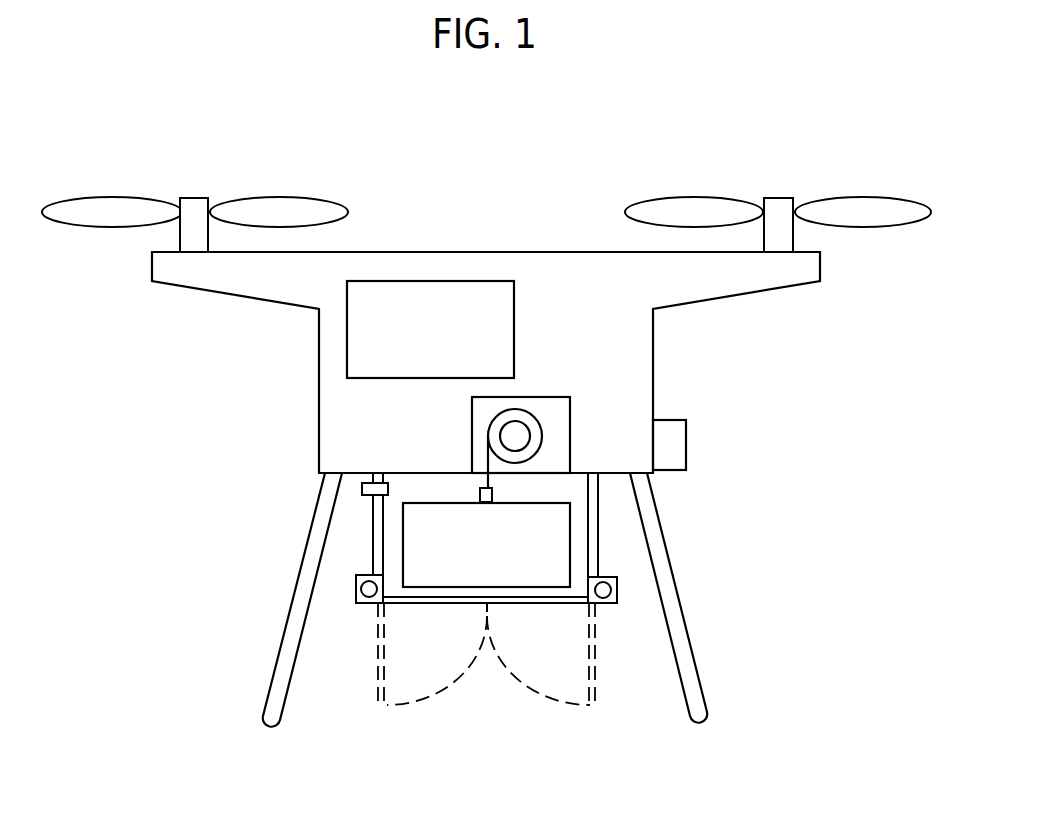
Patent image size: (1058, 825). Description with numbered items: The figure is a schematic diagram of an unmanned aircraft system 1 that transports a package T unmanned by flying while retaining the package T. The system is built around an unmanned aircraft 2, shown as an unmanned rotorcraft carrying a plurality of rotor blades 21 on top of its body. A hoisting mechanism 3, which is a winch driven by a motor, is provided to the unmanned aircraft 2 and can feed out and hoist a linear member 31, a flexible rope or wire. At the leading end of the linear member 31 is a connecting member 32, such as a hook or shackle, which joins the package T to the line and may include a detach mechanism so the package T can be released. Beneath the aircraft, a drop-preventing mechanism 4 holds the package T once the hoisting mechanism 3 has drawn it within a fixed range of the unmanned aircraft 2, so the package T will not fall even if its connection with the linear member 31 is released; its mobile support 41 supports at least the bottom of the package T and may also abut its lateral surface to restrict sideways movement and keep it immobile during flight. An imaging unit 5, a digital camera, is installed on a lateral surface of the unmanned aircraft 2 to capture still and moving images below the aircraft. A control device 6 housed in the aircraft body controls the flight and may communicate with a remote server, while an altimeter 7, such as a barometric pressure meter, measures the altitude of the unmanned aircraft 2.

The unmanned aircraft system 1 is at (706, 146).
The unmanned aircraft 2 is at (552, 244).
The rotor blades 21 is at (121, 197).
The hoisting mechanism 3 is at (588, 420).
The linear member 31 is at (491, 468).
The connecting member 32 is at (494, 494).
The drop-preventing mechanism 4 is at (612, 553).
The mobile support 41 is at (446, 604).
The imaging unit 5 is at (678, 447).
The control device 6 is at (411, 270).
The altimeter 7 is at (364, 489).
The package T is at (403, 545).